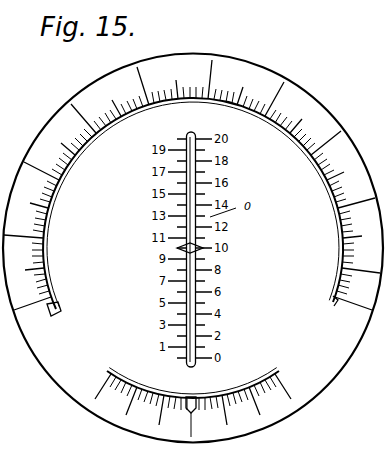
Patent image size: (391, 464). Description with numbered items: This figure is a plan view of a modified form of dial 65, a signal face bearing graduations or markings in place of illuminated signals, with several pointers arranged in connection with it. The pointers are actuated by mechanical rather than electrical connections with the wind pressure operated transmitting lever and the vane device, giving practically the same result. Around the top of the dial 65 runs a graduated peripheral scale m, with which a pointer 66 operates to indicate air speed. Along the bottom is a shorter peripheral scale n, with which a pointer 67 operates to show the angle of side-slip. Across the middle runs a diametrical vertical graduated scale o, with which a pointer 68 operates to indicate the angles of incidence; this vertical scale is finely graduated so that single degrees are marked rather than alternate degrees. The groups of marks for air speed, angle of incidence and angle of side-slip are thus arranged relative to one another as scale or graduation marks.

The dial 65 is at (193, 248).
The pointer 66 is at (62, 309).
The pointer 67 is at (192, 407).
The pointer 68 is at (203, 249).